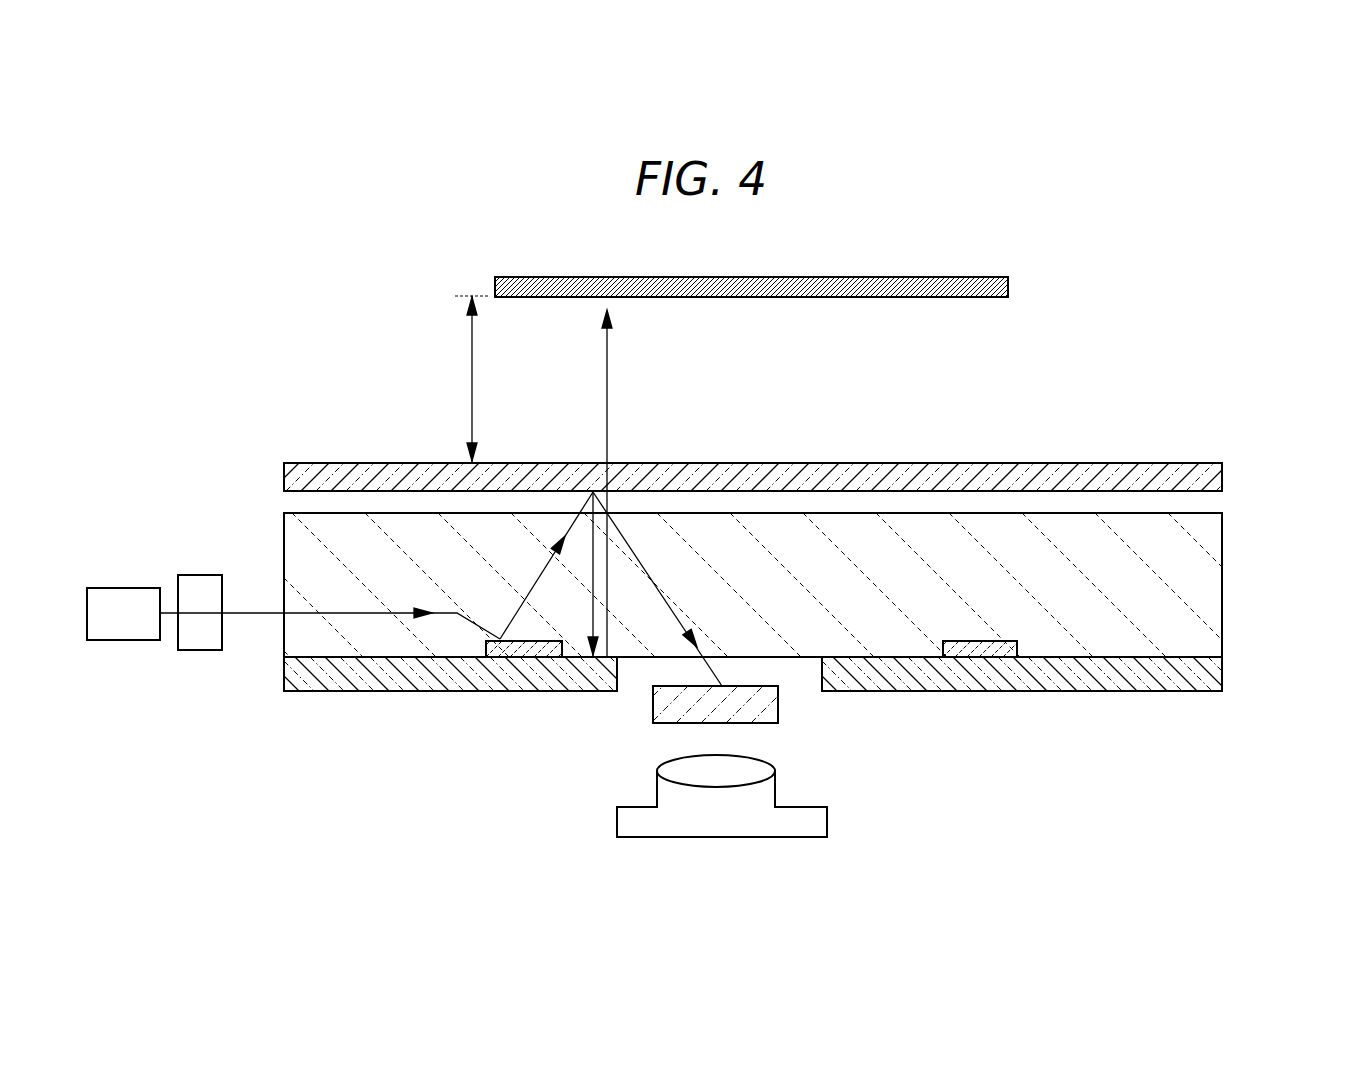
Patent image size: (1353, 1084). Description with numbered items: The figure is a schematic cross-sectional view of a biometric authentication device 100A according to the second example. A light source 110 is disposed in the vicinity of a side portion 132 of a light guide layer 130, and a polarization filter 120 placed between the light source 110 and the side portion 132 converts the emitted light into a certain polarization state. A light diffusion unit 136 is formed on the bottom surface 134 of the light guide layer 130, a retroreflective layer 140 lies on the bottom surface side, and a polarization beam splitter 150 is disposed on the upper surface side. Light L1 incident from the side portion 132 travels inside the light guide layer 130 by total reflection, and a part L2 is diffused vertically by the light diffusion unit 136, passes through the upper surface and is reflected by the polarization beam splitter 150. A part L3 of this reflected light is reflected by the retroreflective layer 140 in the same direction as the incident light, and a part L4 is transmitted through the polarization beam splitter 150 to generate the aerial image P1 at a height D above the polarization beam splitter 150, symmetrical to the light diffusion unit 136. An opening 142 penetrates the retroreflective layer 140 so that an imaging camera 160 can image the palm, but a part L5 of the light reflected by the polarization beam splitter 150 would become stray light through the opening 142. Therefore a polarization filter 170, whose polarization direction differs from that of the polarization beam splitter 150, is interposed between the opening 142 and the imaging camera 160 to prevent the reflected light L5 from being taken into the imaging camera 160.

The biometric authentication device 100A is at (1262, 412).
The light source 110 is at (132, 588).
The polarization filter 120 is at (202, 575).
The light guide layer 130 is at (1222, 586).
The side portion 132 is at (284, 546).
The bottom surface 134 is at (302, 657).
The light diffusion unit 136 is at (550, 640).
The retroreflective layer 140 is at (1222, 670).
The opening 142 is at (627, 672).
The polarization beam splitter 150 is at (1222, 477).
The imaging camera 160 is at (776, 774).
The polarization filter 170 is at (780, 705).
The aerial image P1 is at (1010, 287).
The height D is at (471, 379).
The light L1 is at (330, 613).
The diffused and scattered light L2 is at (546, 565).
The light reflected by the polarization beam splitter L3 is at (580, 574).
The light reflected by the retroreflective layer L4 is at (618, 483).
The reflected light L5 is at (657, 589).